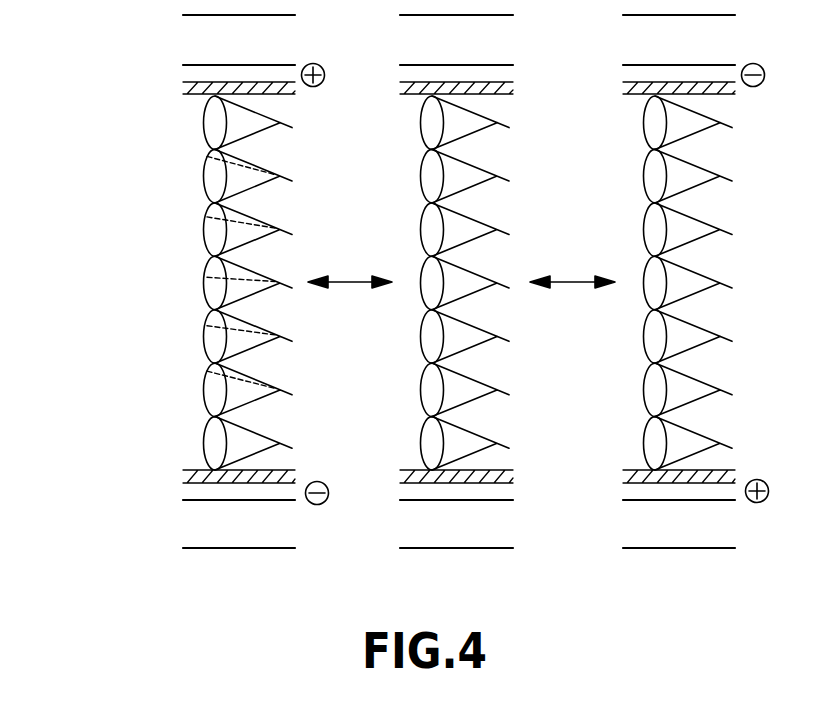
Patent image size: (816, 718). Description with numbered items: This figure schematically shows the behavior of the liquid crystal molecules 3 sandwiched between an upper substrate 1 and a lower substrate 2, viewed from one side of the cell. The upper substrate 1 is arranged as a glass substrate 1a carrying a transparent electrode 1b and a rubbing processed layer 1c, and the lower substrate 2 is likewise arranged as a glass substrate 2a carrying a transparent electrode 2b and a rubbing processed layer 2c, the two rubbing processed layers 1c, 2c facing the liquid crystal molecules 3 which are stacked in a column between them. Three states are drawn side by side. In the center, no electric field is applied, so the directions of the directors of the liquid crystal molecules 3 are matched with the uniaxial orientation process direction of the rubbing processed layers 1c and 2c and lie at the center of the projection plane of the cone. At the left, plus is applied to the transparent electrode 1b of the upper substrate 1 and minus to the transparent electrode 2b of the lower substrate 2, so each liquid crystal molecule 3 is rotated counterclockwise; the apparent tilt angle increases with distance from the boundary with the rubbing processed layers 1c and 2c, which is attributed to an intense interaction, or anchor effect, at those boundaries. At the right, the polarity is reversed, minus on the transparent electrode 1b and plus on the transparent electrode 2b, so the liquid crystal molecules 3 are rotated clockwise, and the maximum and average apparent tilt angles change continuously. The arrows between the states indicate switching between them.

The upper substrate 1 is at (400, 64).
The glass substrate 1a is at (203, 43).
The transparent electrode 1b is at (205, 76).
The rubbing processed layer 1c is at (187, 88).
The lower substrate 2 is at (396, 504).
The glass substrate 2a is at (192, 523).
The transparent electrode 2b is at (207, 513).
The rubbing processed layer 2c is at (207, 475).
The liquid crystal molecule 3 is at (267, 111).